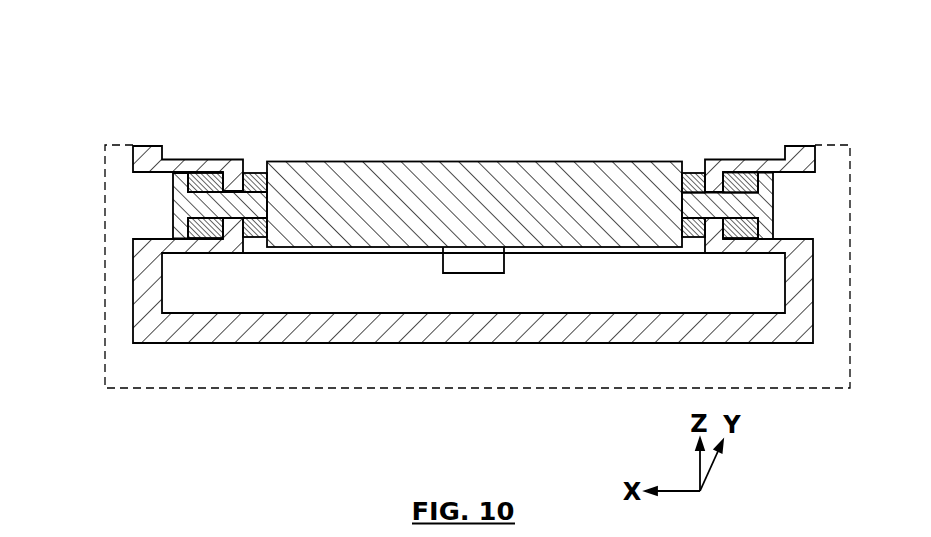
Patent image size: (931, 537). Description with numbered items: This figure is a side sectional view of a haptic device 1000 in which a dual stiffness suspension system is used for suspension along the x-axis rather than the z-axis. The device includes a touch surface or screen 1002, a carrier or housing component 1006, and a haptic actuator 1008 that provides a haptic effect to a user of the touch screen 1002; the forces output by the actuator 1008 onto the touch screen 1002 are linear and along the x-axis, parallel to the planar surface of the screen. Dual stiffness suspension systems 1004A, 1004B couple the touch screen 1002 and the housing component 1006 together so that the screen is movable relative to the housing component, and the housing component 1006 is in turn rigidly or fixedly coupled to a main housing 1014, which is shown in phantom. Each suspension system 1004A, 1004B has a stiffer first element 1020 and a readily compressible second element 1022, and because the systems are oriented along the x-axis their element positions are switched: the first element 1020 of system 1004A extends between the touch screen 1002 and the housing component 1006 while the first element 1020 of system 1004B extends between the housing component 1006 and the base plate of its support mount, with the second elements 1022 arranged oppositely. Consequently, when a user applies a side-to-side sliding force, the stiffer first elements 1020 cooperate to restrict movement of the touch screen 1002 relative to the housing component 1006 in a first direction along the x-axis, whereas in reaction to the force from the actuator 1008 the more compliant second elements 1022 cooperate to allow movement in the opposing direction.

The haptic device 1000 is at (254, 87).
The touch surface or screen 1002 is at (390, 178).
The dual stiffness suspension system 1004A is at (261, 153).
The dual stiffness suspension system 1004B is at (686, 155).
The carrier or housing component 1006 is at (143, 292).
The haptic actuator 1008 is at (453, 264).
The main housing 1014 is at (135, 390).
The first element 1020 is at (250, 183).
The second element 1022 is at (203, 183).